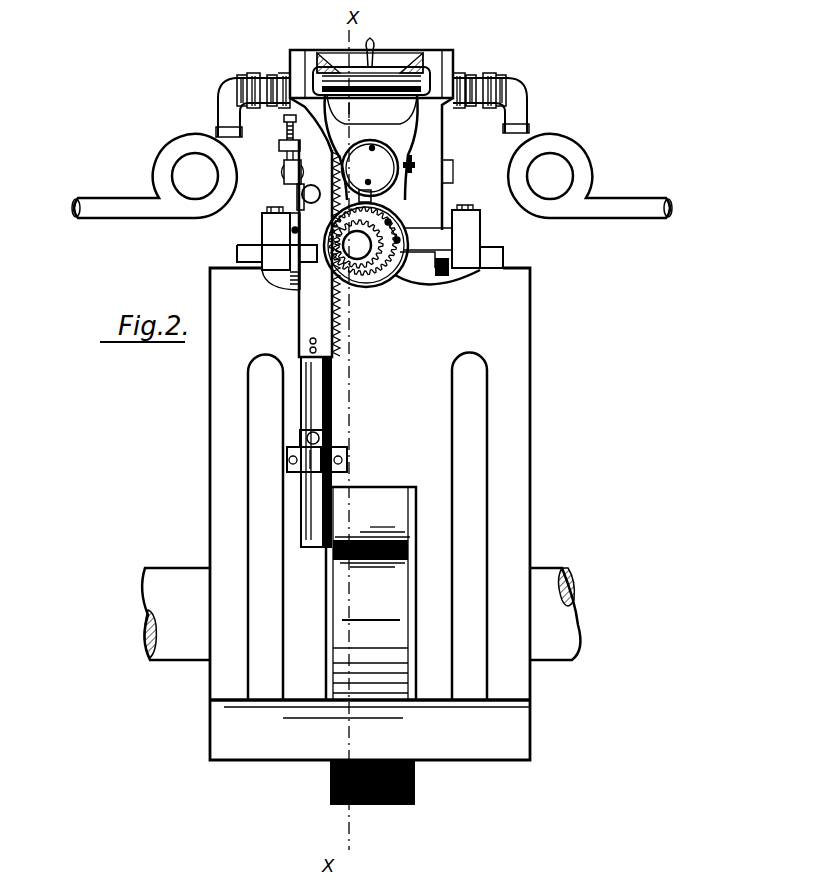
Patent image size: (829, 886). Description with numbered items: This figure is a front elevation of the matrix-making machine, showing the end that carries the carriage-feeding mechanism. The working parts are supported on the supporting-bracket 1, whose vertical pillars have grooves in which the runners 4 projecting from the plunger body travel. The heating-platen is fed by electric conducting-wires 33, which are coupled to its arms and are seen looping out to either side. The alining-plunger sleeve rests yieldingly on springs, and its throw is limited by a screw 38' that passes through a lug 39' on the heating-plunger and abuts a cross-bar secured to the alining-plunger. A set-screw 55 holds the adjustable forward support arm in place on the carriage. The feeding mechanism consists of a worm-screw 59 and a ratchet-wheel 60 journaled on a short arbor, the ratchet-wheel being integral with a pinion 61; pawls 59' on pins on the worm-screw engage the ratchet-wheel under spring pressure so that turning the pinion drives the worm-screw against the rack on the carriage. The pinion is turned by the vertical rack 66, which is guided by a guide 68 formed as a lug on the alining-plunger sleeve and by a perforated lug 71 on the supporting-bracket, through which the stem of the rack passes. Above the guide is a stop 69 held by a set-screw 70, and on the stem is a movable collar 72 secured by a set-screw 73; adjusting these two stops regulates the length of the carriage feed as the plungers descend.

The supporting-bracket 1 is at (428, 461).
The runner 4 is at (504, 258).
The electric conducting-wires 33 is at (178, 150).
The screw 38' is at (273, 126).
The lug 39' is at (271, 147).
The set-screw 55 is at (415, 165).
The worm-screw 59 is at (402, 258).
The pawls 59' is at (474, 236).
The ratchet-wheel 60 is at (370, 272).
The pinion 61 is at (372, 232).
The rack 66 is at (316, 138).
The guide 68 is at (298, 250).
The stop 69 is at (301, 193).
The set-screw 70 is at (308, 203).
The lug 71 is at (316, 458).
The collar 72 is at (306, 440).
The set-screw 73 is at (332, 434).